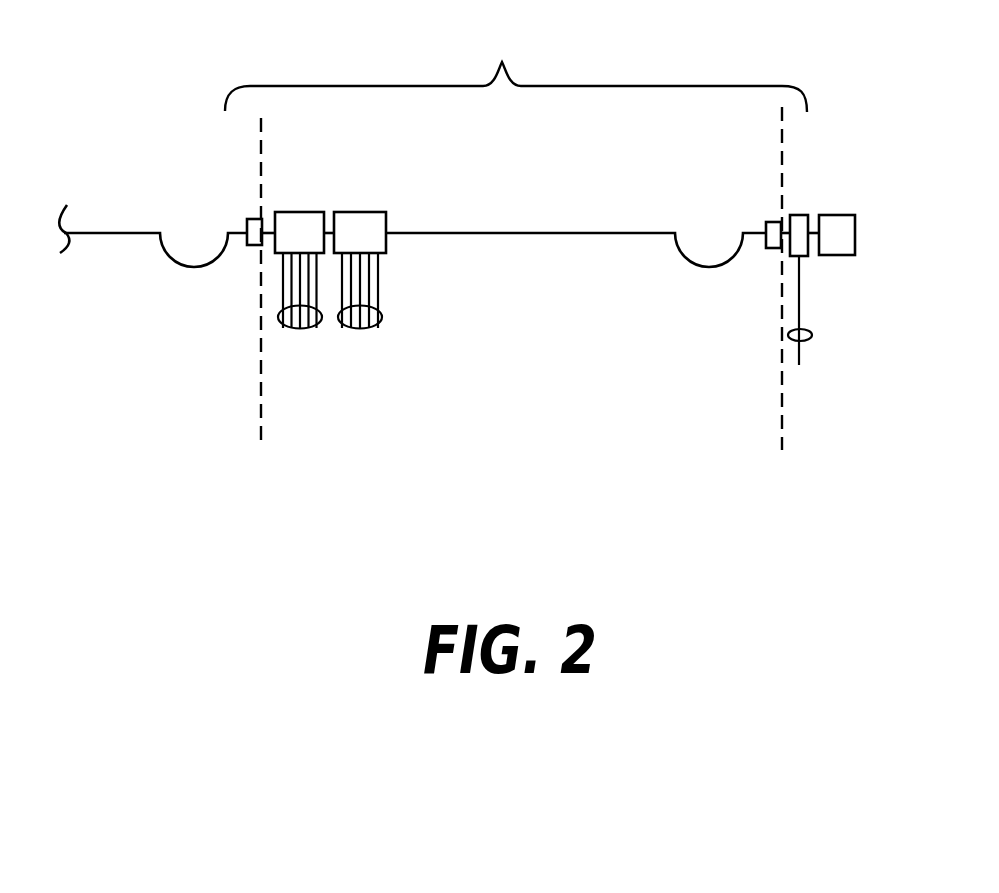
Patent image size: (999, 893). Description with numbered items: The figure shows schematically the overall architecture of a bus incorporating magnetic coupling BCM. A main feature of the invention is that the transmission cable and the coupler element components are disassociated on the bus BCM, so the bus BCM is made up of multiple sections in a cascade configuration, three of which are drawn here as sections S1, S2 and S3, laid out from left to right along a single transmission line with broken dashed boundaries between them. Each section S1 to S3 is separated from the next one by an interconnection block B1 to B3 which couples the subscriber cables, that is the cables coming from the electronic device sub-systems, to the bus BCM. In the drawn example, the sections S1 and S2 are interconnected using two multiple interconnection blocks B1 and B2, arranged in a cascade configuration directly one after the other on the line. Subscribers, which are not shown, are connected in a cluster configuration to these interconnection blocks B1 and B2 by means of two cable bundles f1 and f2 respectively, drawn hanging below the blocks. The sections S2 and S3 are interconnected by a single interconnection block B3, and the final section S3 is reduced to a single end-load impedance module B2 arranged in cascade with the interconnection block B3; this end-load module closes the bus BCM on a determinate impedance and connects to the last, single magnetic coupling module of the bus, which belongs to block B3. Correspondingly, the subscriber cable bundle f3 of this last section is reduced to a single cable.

The magnetic coupling bus BCM is at (516, 66).
The interconnection block B1 is at (287, 208).
The interconnection block B2 is at (386, 208).
The interconnection block B3 is at (801, 210).
The cable bundle f1 is at (312, 331).
The cable bundle f2 is at (377, 331).
The subscriber cable bundle f3 is at (812, 335).
The section S1 is at (90, 377).
The section S2 is at (482, 380).
The section S3 is at (957, 395).